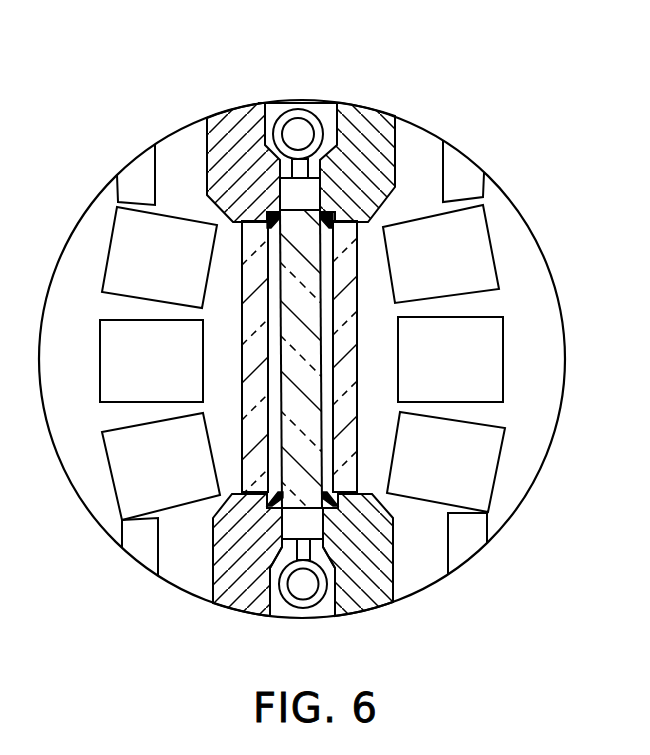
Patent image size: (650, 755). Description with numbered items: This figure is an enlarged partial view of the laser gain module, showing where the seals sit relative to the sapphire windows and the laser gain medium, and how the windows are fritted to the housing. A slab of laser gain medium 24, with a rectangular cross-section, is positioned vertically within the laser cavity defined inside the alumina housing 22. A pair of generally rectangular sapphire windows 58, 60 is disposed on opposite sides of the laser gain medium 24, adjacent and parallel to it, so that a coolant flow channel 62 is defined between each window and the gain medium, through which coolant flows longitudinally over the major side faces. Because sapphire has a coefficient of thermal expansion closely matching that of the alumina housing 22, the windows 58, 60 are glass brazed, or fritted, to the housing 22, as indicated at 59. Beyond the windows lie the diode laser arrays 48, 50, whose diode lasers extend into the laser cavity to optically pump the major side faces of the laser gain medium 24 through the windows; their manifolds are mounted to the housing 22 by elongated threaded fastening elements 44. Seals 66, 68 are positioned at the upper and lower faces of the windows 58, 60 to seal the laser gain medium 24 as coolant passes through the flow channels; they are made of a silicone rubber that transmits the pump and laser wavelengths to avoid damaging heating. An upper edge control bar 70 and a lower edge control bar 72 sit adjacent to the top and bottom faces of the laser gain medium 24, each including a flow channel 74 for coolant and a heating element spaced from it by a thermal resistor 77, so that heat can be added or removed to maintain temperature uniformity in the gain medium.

The housing 22 is at (223, 130).
The laser gain medium 24 is at (243, 577).
The elongated threaded fastening element 44 is at (283, 460).
The diode laser array 48 is at (481, 448).
The diode laser array 50 is at (125, 438).
The window 58 is at (257, 295).
The fritting 59 is at (243, 224).
The window 60 is at (357, 300).
The coolant flow channel 62 is at (395, 600).
The seal 66 is at (267, 214).
The seal 68 is at (345, 168).
The upper edge control bar 70 is at (298, 105).
The lower edge control bar 72 is at (281, 608).
The flow channel 74 is at (305, 128).
The thermal resistor 77 is at (223, 130).